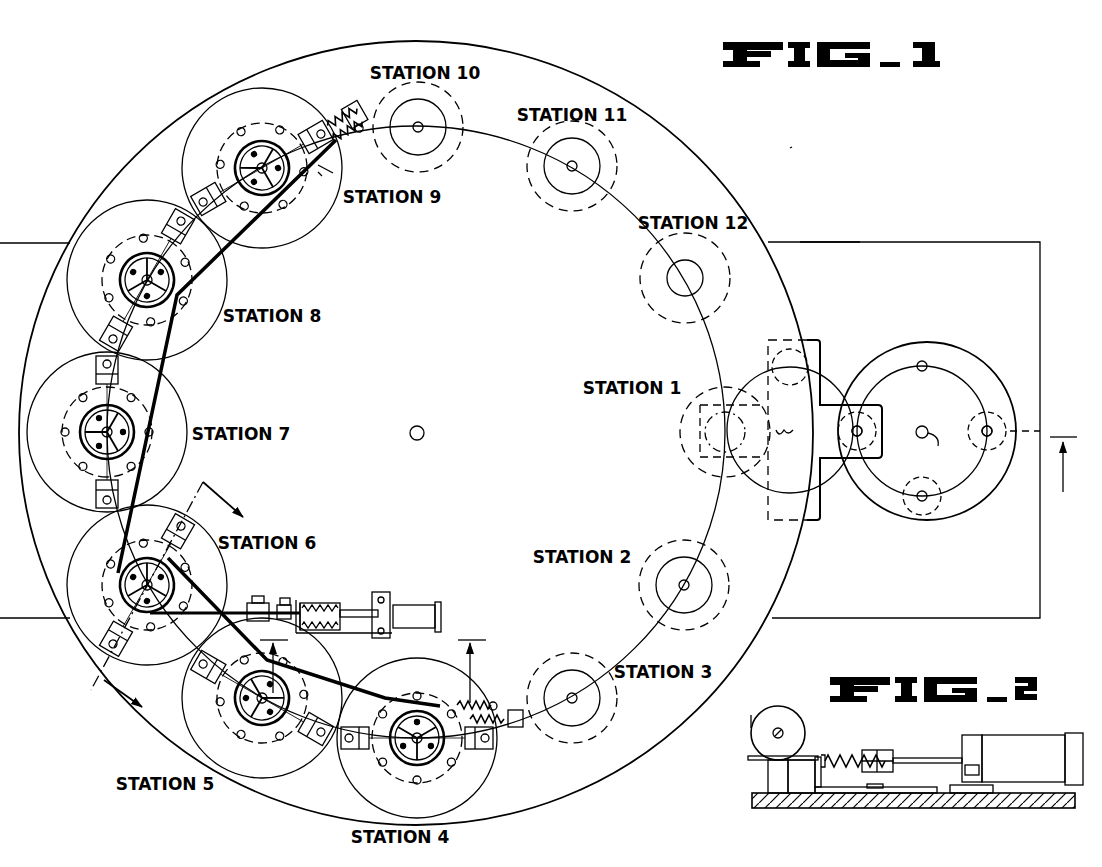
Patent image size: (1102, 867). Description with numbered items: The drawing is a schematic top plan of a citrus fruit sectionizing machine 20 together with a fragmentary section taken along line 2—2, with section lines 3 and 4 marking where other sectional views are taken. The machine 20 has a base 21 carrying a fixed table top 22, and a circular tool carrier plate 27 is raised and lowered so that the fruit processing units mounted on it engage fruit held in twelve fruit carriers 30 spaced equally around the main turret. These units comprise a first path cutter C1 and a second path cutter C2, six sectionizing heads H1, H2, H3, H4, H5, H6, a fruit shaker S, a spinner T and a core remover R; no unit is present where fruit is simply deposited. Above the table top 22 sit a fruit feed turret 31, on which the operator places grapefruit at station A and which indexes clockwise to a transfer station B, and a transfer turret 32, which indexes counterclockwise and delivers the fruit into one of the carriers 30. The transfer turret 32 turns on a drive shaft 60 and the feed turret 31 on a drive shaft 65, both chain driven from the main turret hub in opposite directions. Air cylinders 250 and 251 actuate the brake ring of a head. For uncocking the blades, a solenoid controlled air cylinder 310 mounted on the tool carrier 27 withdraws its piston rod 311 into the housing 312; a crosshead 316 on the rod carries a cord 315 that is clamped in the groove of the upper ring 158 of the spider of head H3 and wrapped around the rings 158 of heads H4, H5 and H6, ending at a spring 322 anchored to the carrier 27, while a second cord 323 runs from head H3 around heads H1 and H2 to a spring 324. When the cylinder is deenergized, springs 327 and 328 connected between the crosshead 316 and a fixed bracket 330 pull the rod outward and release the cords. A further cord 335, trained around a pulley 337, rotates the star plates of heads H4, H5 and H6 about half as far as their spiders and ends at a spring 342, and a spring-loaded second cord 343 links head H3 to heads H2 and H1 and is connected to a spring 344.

In FIG. 1, the machine 20 is at (795, 145).
In FIG. 1, the base 21 is at (827, 242).
In FIG. 1, the table top 22 is at (899, 277).
In FIG. 1, the tool carrier plate 27 is at (168, 125).
In FIG. 2, the tool carrier plate 27 is at (750, 808).
In FIG. 1, the fruit carriers 30 is at (678, 425).
In FIG. 1, the fruit feed turret 31 is at (953, 343).
In FIG. 1, the transfer turret 32 is at (818, 342).
In FIG. 1, the drive shaft 60 is at (790, 421).
In FIG. 1, the drive shaft 65 is at (926, 446).
In FIG. 1, the upper ring 158 is at (252, 438).
In FIG. 1, the air cylinder 250 is at (260, 584).
In FIG. 1, the air cylinder 251 is at (100, 632).
In FIG. 1, the air cylinder 310 is at (443, 620).
In FIG. 2, the air cylinder 310 is at (996, 772).
In FIG. 1, the piston rod 311 is at (391, 606).
In FIG. 2, the piston rod 311 is at (945, 740).
In FIG. 1, the housing 312 is at (442, 605).
In FIG. 2, the housing 312 is at (990, 745).
In FIG. 1, the cord 315 is at (172, 372).
In FIG. 2, the cord 315 is at (748, 758).
In FIG. 1, the crosshead 316 is at (371, 608).
In FIG. 2, the crosshead 316 is at (894, 758).
In FIG. 1, the spring 322 is at (335, 174).
In FIG. 1, the second cord 323 is at (336, 629).
In FIG. 1, the spring 324 is at (479, 704).
In FIG. 1, the spring 327 is at (312, 603).
In FIG. 1, the spring 328 is at (336, 604).
In FIG. 2, the spring 328 is at (838, 754).
In FIG. 1, the fixed bracket 330 is at (352, 634).
In FIG. 2, the fixed bracket 330 is at (822, 784).
In FIG. 1, the cord 335 is at (320, 176).
In FIG. 2, the cord 335 is at (752, 716).
In FIG. 2, the pulley 337 is at (752, 732).
In FIG. 1, the spring 342 is at (340, 128).
In FIG. 1, the second cord 343 is at (482, 742).
In FIG. 1, the spring 344 is at (504, 728).
In FIG. 1, the sectionizing head H1 is at (394, 752).
In FIG. 1, the sectionizing head H2 is at (226, 709).
In FIG. 1, the sectionizing head H3 is at (116, 576).
In FIG. 1, the sectionizing head H4 is at (140, 440).
In FIG. 1, the sectionizing head H5 is at (152, 247).
In FIG. 1, the sectionizing head H6 is at (267, 137).
In FIG. 1, the station A is at (994, 427).
In FIG. 1, the transfer station B is at (866, 428).
In FIG. 1, the first path cutter C1 is at (692, 583).
In FIG. 1, the second path cutter C2 is at (572, 690).
In FIG. 1, the core remover R is at (692, 279).
In FIG. 1, the fruit shaker S is at (426, 126).
In FIG. 1, the spinner T is at (580, 166).
In FIG. 1, the section line 2— 2 is at (373, 671).
In FIG. 1, the section line 3 is at (1043, 448).
In FIG. 1, the section line 4 is at (166, 605).